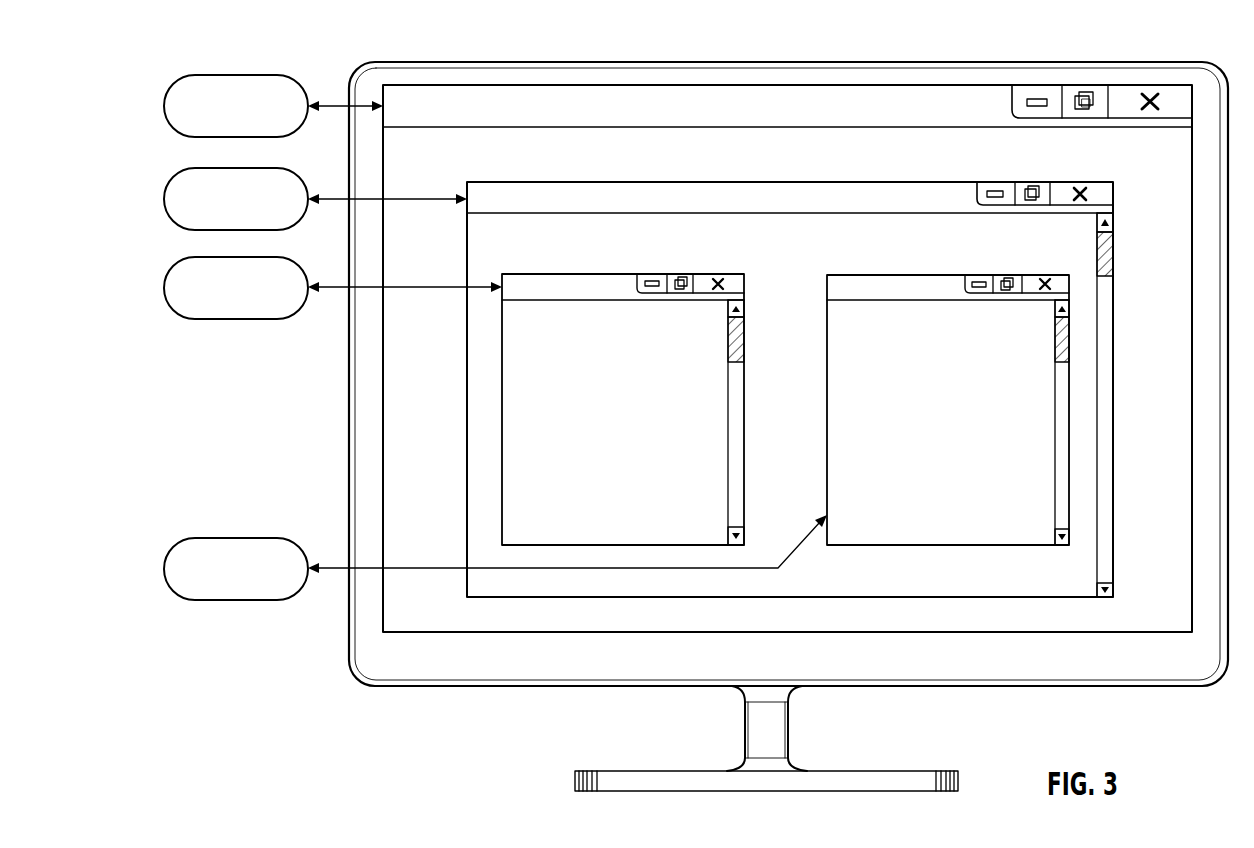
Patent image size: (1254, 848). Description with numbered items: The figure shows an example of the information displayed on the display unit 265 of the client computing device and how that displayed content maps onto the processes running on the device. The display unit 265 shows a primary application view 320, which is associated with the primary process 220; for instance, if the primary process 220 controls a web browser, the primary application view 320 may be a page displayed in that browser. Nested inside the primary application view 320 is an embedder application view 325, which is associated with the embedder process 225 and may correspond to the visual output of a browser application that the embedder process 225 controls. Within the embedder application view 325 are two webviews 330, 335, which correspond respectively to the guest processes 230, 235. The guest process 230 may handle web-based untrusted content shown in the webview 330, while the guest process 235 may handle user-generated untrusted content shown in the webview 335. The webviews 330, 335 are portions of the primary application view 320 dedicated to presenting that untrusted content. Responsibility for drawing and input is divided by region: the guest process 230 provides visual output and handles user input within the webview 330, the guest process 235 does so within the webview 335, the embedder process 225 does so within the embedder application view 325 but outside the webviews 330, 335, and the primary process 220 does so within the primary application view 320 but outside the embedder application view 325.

The primary process 220 is at (218, 76).
The embedder process 225 is at (218, 169).
The guest process 230 is at (216, 319).
The guest process 235 is at (218, 537).
The display unit 265 is at (1030, 62).
The primary application view 320 is at (632, 85).
The embedder application view 325 is at (789, 182).
The webview 330 is at (700, 274).
The webview 335 is at (1024, 275).